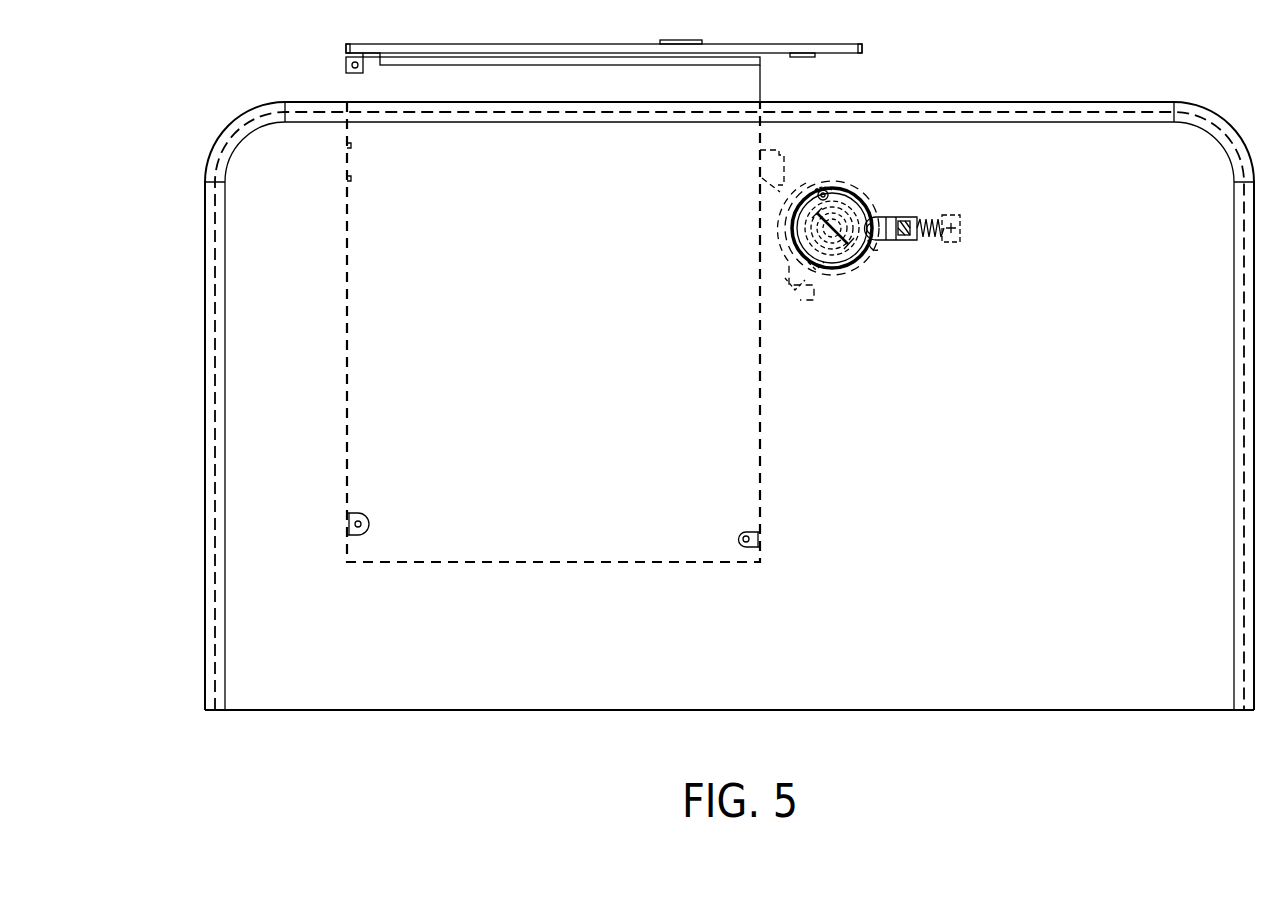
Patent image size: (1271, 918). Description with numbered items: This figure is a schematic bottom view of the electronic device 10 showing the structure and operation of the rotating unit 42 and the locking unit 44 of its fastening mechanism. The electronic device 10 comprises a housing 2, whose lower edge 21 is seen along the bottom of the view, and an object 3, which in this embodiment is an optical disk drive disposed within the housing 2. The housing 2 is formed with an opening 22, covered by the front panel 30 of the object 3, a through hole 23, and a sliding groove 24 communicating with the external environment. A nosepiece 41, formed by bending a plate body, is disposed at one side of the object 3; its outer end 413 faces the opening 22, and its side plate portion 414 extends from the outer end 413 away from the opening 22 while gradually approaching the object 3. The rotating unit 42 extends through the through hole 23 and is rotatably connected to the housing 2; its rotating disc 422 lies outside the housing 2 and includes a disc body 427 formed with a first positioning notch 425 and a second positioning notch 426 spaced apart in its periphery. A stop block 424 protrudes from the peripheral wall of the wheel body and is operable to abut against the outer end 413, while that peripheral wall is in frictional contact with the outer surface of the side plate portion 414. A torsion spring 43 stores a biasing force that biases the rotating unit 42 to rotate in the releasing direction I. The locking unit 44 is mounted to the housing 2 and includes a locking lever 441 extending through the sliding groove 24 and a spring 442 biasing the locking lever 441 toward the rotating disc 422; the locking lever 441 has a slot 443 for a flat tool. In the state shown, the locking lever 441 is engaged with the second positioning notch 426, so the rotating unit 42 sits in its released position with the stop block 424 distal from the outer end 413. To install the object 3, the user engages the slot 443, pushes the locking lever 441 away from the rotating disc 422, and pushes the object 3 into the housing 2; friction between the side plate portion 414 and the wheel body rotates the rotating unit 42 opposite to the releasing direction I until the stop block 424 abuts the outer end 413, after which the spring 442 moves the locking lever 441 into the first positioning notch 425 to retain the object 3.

The electronic device 10 is at (190, 99).
The housing 2 is at (199, 212).
The bottom wall 21 is at (297, 674).
The opening 22 is at (356, 100).
The through hole 23 is at (868, 186).
The sliding groove 24 is at (887, 217).
The object 3 is at (868, 63).
The front panel 30 is at (844, 45).
The nosepiece 41 is at (763, 194).
The outer end 413 is at (762, 150).
The side plate portion 414 is at (762, 178).
The rotating unit 42 is at (776, 299).
The rotating disc 422 is at (816, 268).
The stop block 424 is at (788, 286).
The first positioning notch 425 is at (828, 189).
The second positioning notch 426 is at (870, 245).
The disc body 427 is at (832, 268).
The torsion spring 43 is at (814, 232).
The locking unit 44 is at (952, 252).
The locking lever 441 is at (962, 228).
The spring 442 is at (934, 244).
The slot 443 is at (879, 244).
The releasing direction I is at (866, 292).